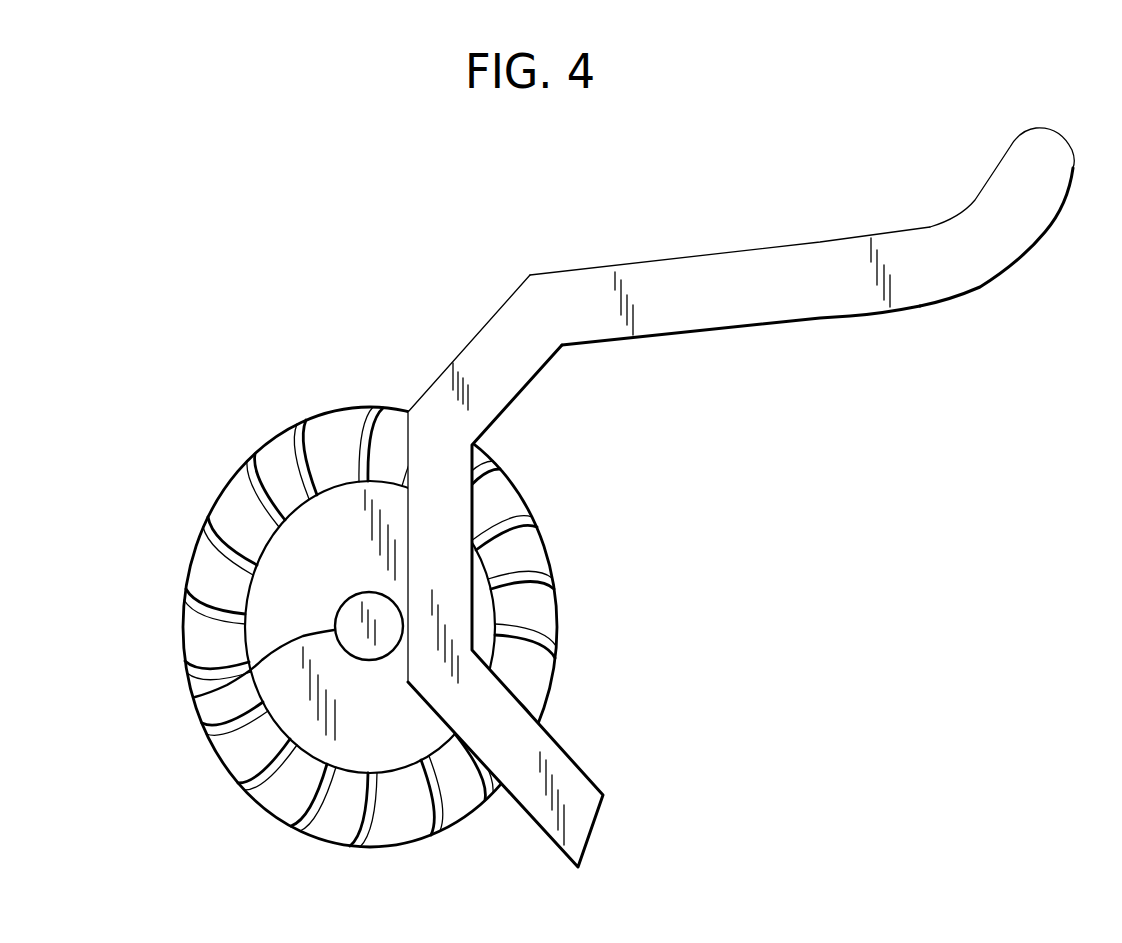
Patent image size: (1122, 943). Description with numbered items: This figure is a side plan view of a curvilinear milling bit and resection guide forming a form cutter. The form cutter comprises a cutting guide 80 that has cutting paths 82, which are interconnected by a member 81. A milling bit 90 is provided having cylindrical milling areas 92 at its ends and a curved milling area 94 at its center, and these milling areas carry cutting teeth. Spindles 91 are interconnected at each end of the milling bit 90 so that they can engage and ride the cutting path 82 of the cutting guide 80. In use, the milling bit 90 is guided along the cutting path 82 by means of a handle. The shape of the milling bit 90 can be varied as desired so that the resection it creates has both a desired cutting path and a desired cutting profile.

The cutting guide 80 is at (427, 336).
The member 81 is at (1052, 116).
The cutting path 82 is at (593, 263).
The milling bit 90 is at (541, 511).
The spindle 91 is at (195, 697).
The cylindrical milling area 92 is at (330, 472).
The curved milling area 94 is at (220, 472).